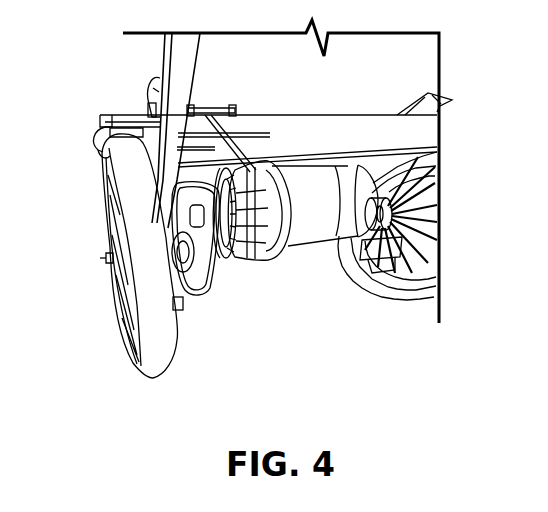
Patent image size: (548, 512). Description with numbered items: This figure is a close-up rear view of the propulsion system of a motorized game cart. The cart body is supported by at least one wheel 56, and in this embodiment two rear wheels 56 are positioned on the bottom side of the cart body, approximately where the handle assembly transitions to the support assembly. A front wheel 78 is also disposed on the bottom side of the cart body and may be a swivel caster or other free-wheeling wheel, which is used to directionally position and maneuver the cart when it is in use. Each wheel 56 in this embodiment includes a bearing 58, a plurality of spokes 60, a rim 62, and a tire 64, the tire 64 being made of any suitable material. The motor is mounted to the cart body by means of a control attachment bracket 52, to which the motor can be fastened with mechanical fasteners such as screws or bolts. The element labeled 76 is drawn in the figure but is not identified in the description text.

The control attachment bracket 52 is at (339, 132).
The wheel 56 is at (102, 284).
The bearing 58 is at (440, 200).
The spokes 60 is at (447, 256).
The rim 62 is at (354, 259).
The tire 64 is at (126, 163).
The axle bolt 76 is at (105, 258).
The front wheel 78 is at (185, 138).